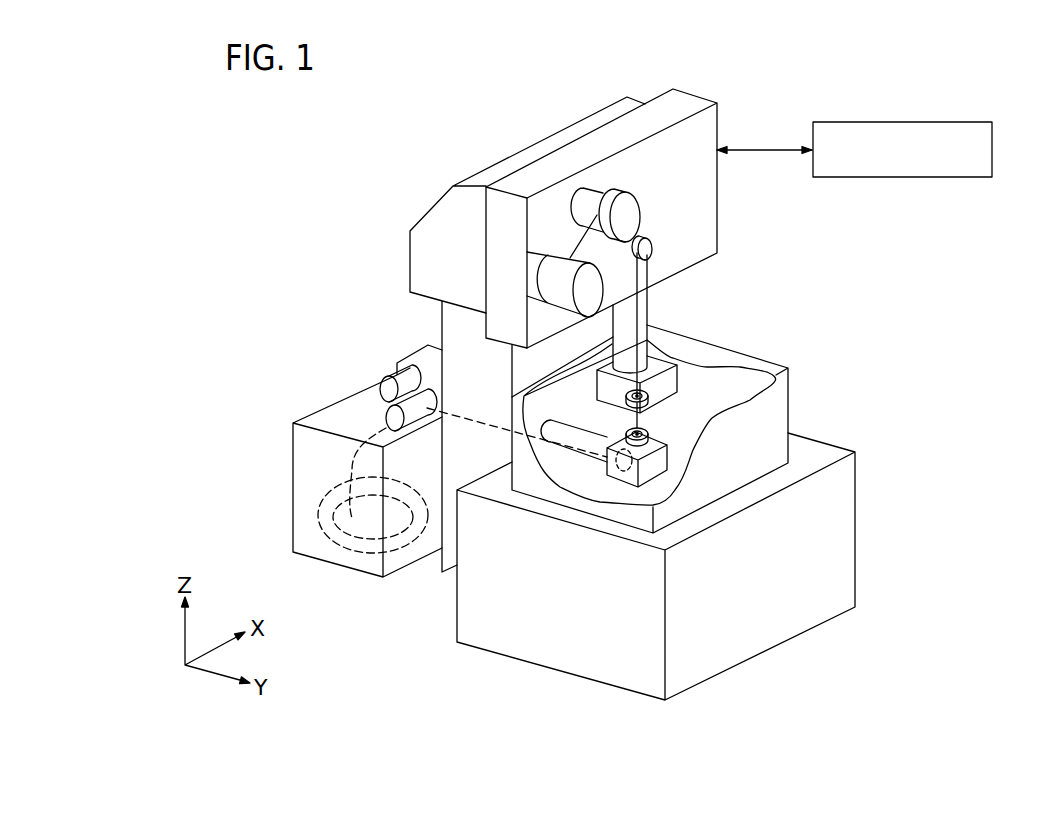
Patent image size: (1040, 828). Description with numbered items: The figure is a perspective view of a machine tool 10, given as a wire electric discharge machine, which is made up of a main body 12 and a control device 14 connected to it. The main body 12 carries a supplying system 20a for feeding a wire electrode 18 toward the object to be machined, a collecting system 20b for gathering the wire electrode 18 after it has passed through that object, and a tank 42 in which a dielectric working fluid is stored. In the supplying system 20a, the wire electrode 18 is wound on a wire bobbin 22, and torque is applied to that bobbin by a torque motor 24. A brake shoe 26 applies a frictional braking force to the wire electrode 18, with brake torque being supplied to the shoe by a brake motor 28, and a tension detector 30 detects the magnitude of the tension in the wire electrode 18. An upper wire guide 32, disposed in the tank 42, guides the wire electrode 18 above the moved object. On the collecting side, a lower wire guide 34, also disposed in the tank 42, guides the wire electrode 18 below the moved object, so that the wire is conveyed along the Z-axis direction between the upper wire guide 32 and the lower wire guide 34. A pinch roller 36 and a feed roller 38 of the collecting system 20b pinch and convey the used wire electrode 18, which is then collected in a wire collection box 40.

The machine tool 10 is at (263, 153).
The main body 12 is at (404, 216).
The control device 14 is at (928, 122).
The wire electrode 18 is at (640, 273).
The supplying system 20a is at (628, 218).
The collecting system 20b is at (418, 447).
The wire bobbin 22 is at (558, 267).
The torque motor 24 is at (527, 270).
The brake shoe 26 is at (627, 207).
The brake motor 28 is at (585, 203).
The tension detector 30 is at (648, 253).
The upper wire guide 32 is at (653, 365).
The lower wire guide 34 is at (656, 462).
The pinch roller 36 is at (407, 378).
The feed roller 38 is at (422, 418).
The wire collection box 40 is at (303, 463).
The tank 42 is at (758, 365).